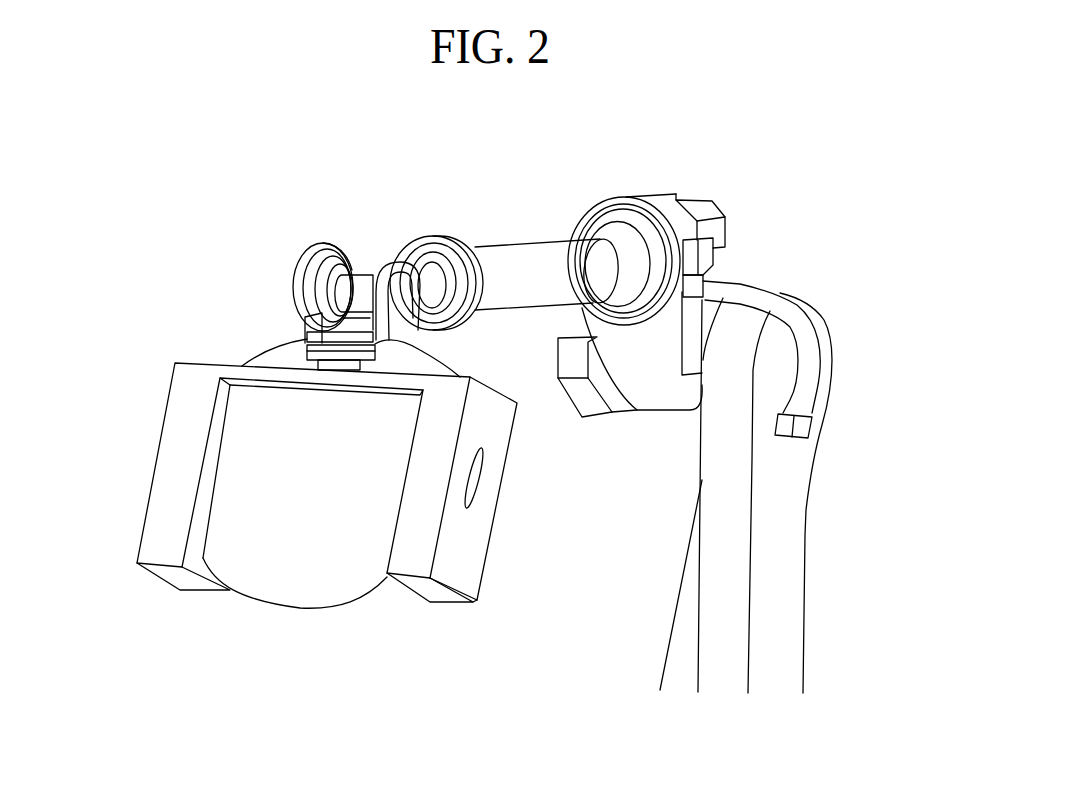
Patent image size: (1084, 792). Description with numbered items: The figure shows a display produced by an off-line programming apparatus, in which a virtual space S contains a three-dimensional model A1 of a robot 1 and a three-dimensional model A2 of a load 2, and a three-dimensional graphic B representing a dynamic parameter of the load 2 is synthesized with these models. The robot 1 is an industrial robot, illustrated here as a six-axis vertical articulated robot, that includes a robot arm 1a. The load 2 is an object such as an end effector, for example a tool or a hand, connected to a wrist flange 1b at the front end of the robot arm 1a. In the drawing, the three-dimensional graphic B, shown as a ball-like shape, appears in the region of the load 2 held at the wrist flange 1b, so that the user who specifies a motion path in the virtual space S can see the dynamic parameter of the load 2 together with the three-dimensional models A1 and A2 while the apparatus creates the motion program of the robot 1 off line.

The robot 1 is at (858, 257).
The robot arm 1a is at (521, 245).
The wrist flange 1b is at (303, 352).
The load 2 is at (160, 507).
The three-dimensional model of the robot A1 is at (747, 200).
The three-dimensional model of the load A2 is at (140, 418).
The three-dimensional graphic B is at (293, 573).
The virtual space S is at (862, 530).